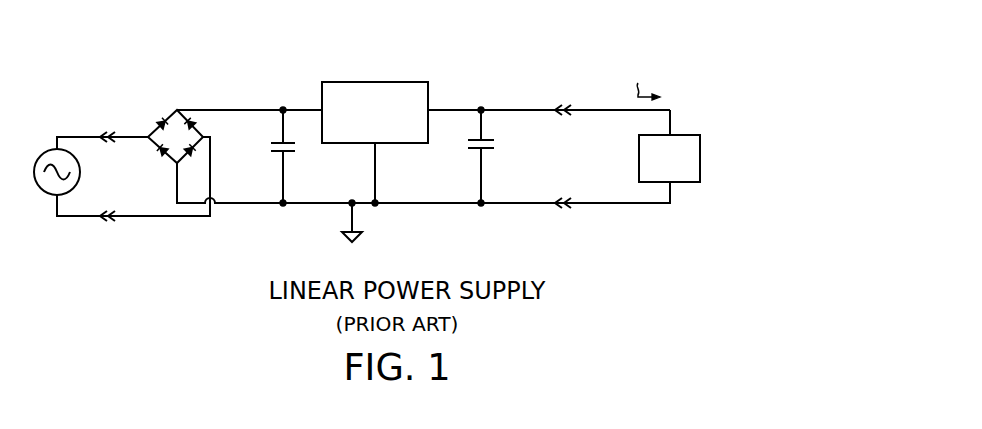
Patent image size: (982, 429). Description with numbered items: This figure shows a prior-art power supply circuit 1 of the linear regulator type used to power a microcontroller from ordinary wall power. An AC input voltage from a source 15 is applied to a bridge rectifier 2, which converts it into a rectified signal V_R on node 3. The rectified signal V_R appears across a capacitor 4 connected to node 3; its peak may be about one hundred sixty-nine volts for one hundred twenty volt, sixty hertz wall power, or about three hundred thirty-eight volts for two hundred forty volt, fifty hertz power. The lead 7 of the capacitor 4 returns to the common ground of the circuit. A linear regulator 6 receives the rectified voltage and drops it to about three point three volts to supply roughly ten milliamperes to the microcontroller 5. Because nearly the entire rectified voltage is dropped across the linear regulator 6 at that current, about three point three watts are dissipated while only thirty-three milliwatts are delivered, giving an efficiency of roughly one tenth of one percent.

The power supply circuit 1 is at (498, 41).
The bridge rectifier 2 is at (171, 143).
The node 3 is at (210, 110).
The capacitor 4 is at (291, 142).
The microcontroller 5 is at (690, 135).
The linear regulator 6 is at (378, 81).
The capacitor ground lead 7 is at (286, 168).
The source 15 is at (81, 172).